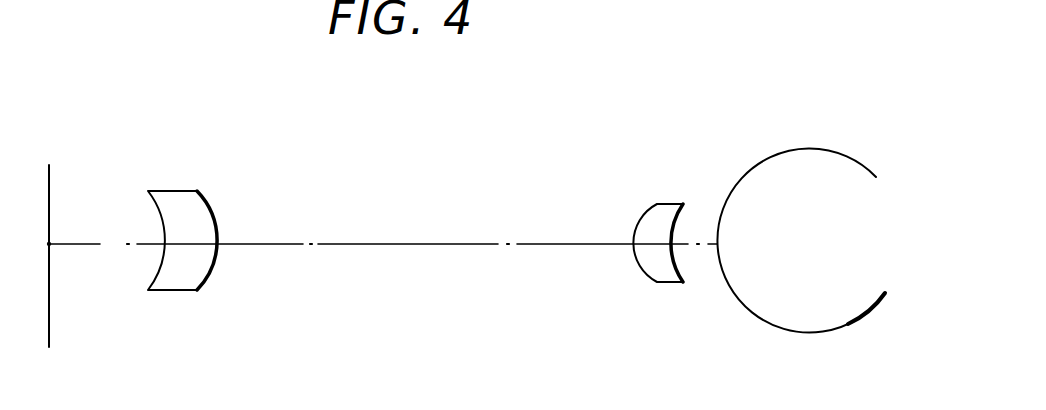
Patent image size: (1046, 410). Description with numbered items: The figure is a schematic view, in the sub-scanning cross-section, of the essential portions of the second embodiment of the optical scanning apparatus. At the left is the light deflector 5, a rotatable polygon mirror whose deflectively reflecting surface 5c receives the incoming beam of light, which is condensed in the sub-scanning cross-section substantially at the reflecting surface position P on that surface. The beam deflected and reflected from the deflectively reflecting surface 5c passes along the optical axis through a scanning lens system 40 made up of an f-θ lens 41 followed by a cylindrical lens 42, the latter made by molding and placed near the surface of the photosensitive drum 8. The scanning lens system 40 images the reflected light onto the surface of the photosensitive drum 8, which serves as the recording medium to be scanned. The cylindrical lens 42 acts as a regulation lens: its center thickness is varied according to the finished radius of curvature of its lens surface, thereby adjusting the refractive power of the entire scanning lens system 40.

The light deflector 5 is at (49, 165).
The deflectively reflecting surface 5c is at (50, 210).
The reflecting surface position P is at (50, 247).
The scanning lens system 40 is at (680, 133).
The f-θ lens 41 is at (196, 190).
The cylindrical lens 42 is at (660, 203).
The photosensitive drum 8 is at (753, 170).